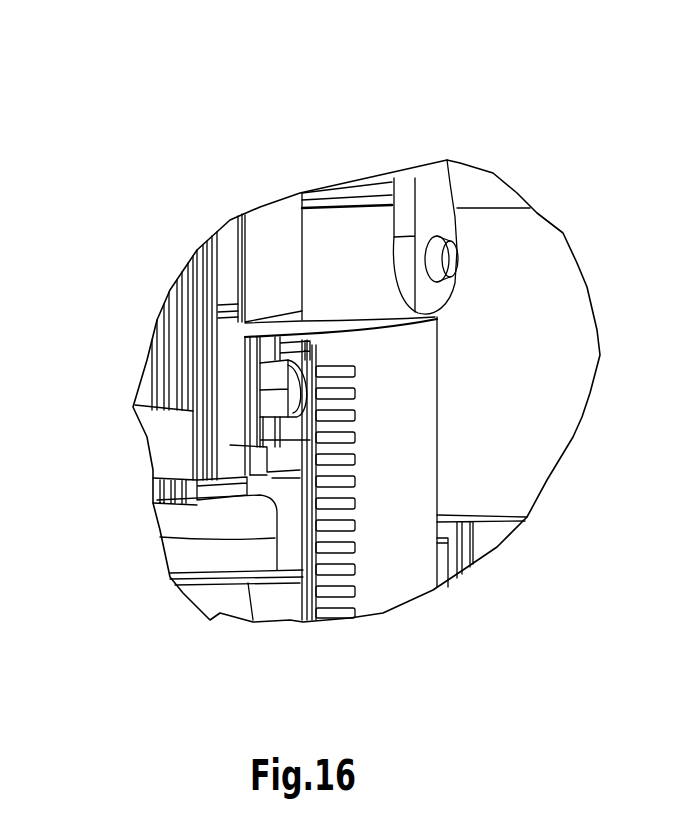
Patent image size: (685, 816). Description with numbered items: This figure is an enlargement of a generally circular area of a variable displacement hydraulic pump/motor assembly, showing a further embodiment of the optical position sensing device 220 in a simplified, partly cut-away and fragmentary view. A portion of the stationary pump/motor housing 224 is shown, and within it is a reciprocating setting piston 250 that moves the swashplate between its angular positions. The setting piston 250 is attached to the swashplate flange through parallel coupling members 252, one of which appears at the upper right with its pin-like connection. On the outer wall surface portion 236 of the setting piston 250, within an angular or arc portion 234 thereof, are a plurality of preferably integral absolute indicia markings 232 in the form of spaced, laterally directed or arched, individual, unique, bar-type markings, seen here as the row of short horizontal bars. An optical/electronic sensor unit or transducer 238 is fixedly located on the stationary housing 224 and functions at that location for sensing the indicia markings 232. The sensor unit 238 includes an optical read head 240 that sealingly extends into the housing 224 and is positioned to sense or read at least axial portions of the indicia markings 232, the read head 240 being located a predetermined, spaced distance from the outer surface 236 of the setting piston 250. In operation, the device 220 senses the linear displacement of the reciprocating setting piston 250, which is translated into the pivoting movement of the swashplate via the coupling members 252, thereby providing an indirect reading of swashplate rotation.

The optical position sensing device 220 is at (146, 337).
The stationary pump/motor housing 224 is at (240, 600).
The absolute indicia markings 232 is at (352, 458).
The angular or arc portion 234 is at (332, 353).
The outer wall surface portion 236 is at (393, 583).
The optical/electronic sensor unit 238 is at (162, 378).
The optical read head 240 is at (273, 387).
The reciprocating setting piston 250 is at (410, 373).
The coupling members 252 is at (430, 203).